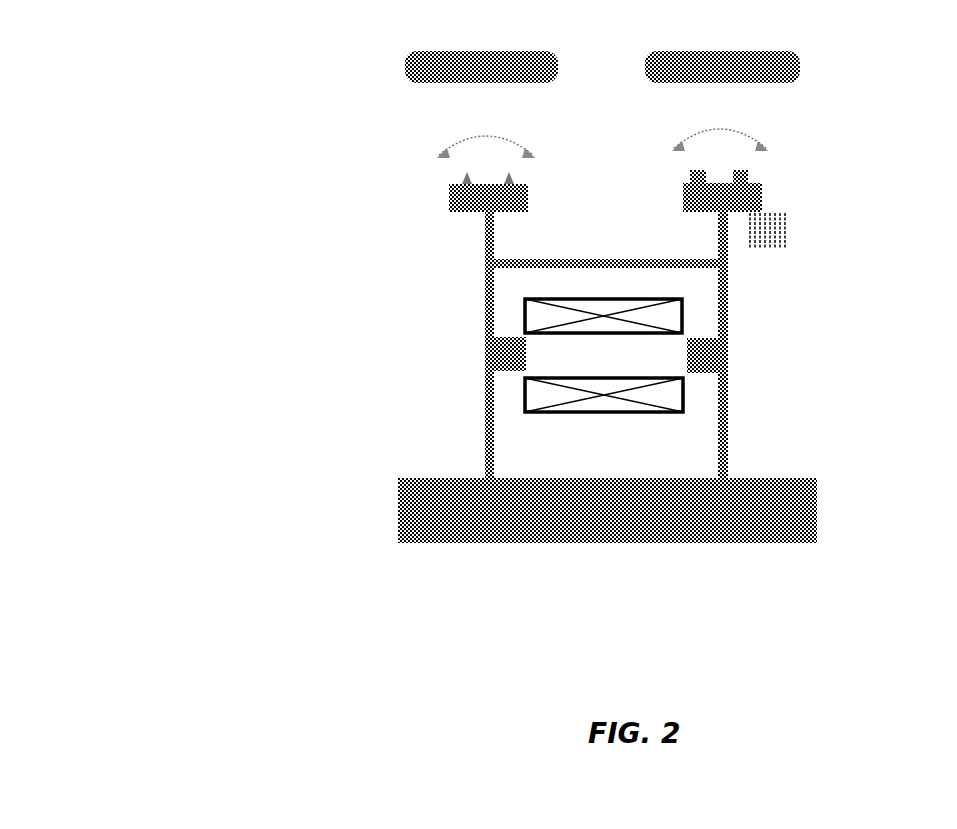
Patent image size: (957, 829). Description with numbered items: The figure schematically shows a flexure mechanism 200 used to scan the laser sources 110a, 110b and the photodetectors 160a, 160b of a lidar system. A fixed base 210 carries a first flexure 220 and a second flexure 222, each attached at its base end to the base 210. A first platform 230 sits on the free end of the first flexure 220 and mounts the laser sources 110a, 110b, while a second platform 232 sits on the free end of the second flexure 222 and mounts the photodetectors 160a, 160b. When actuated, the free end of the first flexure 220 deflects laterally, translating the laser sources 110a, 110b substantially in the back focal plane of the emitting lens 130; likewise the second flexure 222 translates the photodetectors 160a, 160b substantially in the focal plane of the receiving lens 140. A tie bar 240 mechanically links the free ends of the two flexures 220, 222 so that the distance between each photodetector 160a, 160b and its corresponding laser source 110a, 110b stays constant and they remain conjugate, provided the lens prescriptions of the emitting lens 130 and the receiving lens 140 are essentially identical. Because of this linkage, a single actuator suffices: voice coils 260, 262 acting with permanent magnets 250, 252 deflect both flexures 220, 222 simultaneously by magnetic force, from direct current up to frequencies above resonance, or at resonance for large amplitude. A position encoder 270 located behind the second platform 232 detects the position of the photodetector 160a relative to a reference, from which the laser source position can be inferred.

The flexure mechanism 200 is at (270, 395).
The emitting lens 130 is at (405, 67).
The receiving lens 140 is at (797, 68).
The laser source 110a is at (464, 180).
The laser source 110b is at (512, 178).
The photodetector 160a is at (690, 177).
The photodetector 160b is at (748, 178).
The fixed base 210 is at (810, 508).
The first flexure 220 is at (485, 413).
The second flexure 222 is at (728, 450).
The first platform 230 is at (457, 200).
The second platform 232 is at (698, 195).
The tie bar 240 is at (551, 258).
The permanent magnet 250 is at (494, 350).
The permanent magnet 252 is at (714, 360).
The voice coil 260 is at (672, 309).
The voice coil 262 is at (673, 396).
The position encoder 270 is at (787, 222).